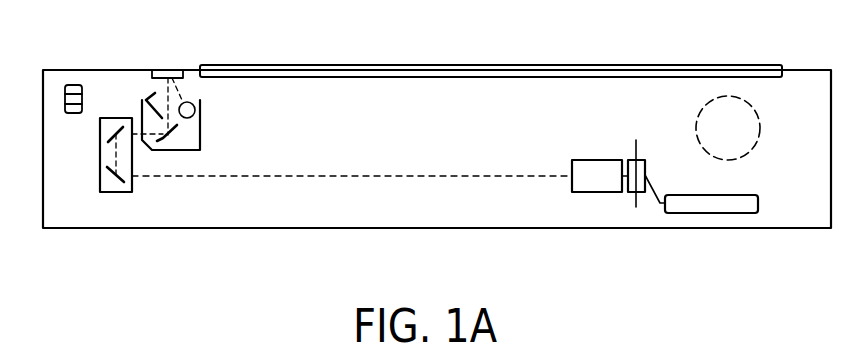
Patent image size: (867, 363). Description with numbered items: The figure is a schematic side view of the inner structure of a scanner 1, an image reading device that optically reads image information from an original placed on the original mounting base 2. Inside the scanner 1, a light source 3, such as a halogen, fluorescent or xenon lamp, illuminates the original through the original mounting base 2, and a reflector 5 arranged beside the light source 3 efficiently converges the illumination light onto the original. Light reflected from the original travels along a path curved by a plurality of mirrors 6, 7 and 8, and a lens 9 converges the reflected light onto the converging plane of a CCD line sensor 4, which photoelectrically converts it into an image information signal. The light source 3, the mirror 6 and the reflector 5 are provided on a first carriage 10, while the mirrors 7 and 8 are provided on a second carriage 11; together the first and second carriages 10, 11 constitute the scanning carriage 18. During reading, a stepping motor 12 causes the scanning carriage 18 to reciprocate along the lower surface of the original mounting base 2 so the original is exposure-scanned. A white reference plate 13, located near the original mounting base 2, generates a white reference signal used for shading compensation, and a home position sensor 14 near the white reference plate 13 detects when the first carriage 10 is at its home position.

The scanner 1 is at (222, 229).
The original mounting base 2 is at (721, 65).
The light source 3 is at (195, 104).
The CCD line sensor 4 is at (646, 162).
The reflector 5 is at (141, 100).
The mirror 6 is at (170, 150).
The mirror 7 is at (107, 134).
The mirror 8 is at (107, 172).
The lens 9 is at (594, 160).
The first carriage 10 is at (165, 140).
The second carriage 11 is at (107, 193).
The stepping motor 12 is at (762, 128).
The white reference plate 13 is at (170, 70).
The home position sensor 14 is at (72, 85).
The scanning carriage 18 is at (203, 112).